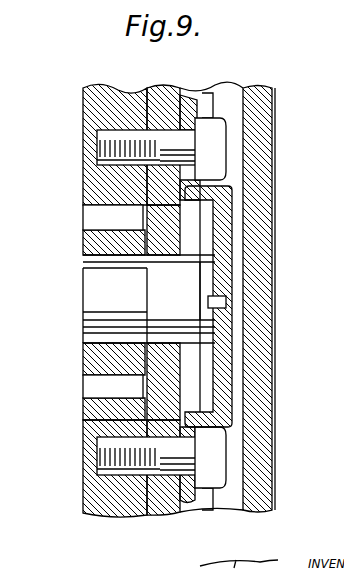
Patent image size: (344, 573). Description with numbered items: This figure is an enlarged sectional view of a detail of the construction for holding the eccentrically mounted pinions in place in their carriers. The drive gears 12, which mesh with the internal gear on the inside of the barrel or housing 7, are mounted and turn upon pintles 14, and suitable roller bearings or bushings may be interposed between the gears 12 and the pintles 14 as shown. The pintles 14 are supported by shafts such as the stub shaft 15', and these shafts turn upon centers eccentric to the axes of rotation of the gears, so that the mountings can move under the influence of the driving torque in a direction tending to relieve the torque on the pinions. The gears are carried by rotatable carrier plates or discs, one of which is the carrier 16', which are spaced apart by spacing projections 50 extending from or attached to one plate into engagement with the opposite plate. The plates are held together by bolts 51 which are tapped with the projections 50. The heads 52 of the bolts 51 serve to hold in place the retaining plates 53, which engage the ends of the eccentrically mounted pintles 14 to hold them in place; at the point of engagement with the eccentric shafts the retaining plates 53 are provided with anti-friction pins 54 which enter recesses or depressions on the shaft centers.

The barrel or housing 7 is at (258, 387).
The drive gears 12 is at (92, 225).
The pintles 14 is at (149, 299).
The stub shaft 15' is at (180, 291).
The rotatable carrier 16' is at (149, 383).
The spacing projections 50 is at (83, 107).
The bolts 51 is at (127, 150).
The heads of the bolts 52 is at (218, 130).
The retaining plates 53 is at (232, 253).
The anti-friction pins 54 is at (226, 300).